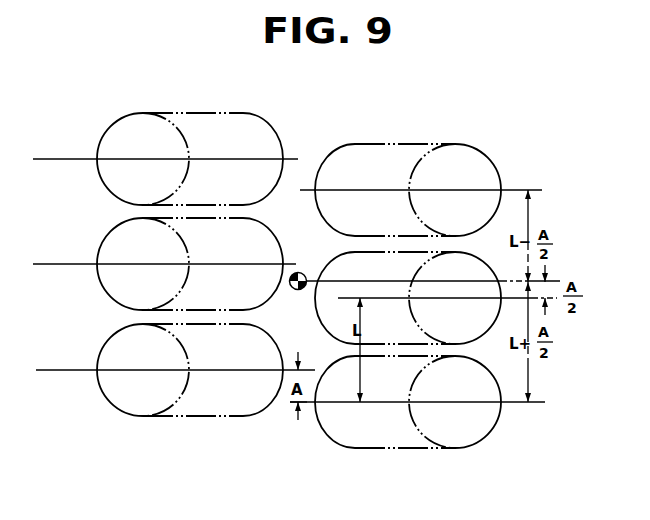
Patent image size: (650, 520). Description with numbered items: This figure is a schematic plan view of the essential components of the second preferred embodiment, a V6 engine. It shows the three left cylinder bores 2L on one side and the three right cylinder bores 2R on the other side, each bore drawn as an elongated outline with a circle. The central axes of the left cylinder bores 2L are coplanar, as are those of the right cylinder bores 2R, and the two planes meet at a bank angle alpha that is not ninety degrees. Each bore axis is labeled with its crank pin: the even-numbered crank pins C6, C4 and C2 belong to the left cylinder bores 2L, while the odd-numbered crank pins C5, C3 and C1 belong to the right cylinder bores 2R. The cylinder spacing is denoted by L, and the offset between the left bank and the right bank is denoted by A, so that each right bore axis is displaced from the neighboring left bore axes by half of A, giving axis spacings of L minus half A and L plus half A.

The left cylinder bores 2L is at (243, 113).
The right cylinder bores 2R is at (410, 146).
The crank pin C6 is at (165, 174).
The crank pin C4 is at (164, 279).
The crank pin C2 is at (175, 387).
The crank pin C5 is at (421, 205).
The crank pin C3 is at (447, 314).
The crank pin C1 is at (417, 416).